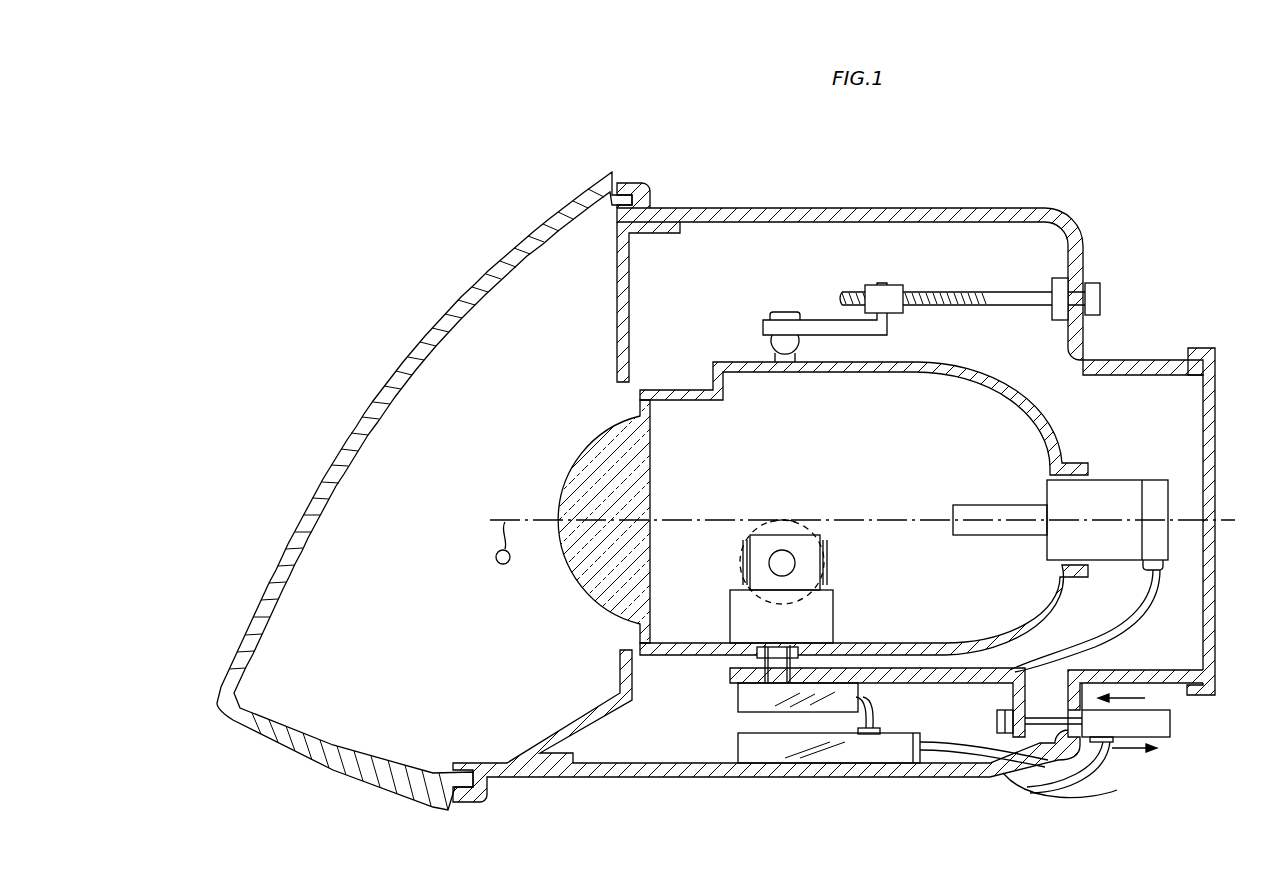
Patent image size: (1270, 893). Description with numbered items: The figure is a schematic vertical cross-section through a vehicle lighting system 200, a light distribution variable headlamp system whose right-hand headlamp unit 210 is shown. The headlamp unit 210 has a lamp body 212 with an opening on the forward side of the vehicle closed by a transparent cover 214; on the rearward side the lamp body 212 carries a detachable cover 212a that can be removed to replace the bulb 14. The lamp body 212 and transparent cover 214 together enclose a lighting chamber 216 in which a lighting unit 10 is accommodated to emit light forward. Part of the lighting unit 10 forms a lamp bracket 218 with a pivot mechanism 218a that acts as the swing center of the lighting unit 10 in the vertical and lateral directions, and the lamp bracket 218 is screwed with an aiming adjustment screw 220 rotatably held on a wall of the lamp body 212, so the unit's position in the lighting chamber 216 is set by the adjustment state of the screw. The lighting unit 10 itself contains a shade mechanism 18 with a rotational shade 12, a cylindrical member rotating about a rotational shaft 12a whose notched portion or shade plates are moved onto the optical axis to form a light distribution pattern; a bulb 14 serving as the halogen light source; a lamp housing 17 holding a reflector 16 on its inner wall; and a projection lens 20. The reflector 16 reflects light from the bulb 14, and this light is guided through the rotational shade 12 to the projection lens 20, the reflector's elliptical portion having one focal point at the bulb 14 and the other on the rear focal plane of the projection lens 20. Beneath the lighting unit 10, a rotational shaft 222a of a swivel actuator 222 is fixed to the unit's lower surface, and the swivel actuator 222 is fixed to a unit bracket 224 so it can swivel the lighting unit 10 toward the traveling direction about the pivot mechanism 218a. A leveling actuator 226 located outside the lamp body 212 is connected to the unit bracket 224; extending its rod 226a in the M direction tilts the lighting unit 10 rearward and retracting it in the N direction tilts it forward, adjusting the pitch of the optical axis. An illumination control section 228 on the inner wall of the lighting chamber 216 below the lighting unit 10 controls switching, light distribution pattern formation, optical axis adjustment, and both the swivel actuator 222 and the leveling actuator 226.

The vehicle lighting system 200 is at (634, 839).
The headlamp unit 210 is at (974, 204).
The lamp body 212 is at (806, 210).
The detachable cover 212a is at (1203, 349).
The transparent cover 214 is at (458, 303).
The lighting chamber 216 is at (533, 338).
The lamp bracket 218 is at (830, 326).
The pivot mechanism 218a is at (780, 340).
The aiming adjustment screw 220 is at (1013, 296).
The lighting unit 10 is at (683, 384).
The rotational shade 12 is at (795, 518).
The rotational shaft 12a is at (797, 560).
The bulb 14 is at (994, 512).
The reflector 16 is at (921, 376).
The lamp housing 17 is at (993, 395).
The shade mechanism 18 is at (780, 505).
The projection lens 20 is at (580, 455).
The swivel actuator 222 is at (745, 697).
The rotational shaft 222a is at (765, 667).
The unit bracket 224 is at (912, 684).
The leveling actuator 226 is at (1170, 725).
The rod 226a is at (1048, 722).
The illumination control section 228 is at (838, 755).